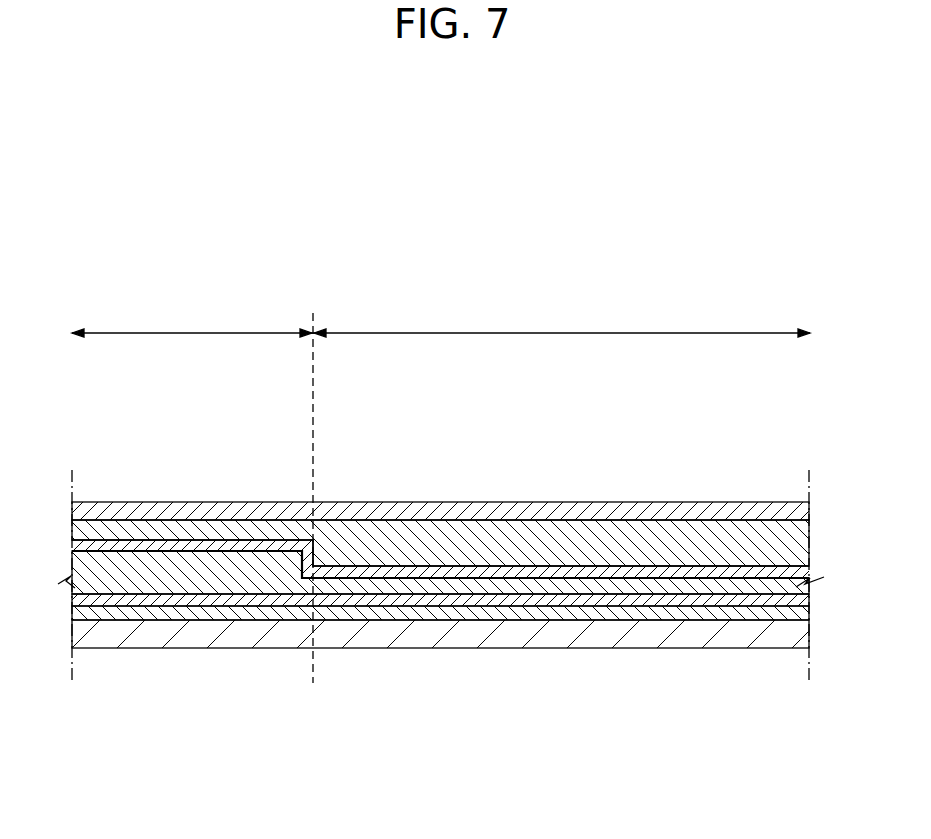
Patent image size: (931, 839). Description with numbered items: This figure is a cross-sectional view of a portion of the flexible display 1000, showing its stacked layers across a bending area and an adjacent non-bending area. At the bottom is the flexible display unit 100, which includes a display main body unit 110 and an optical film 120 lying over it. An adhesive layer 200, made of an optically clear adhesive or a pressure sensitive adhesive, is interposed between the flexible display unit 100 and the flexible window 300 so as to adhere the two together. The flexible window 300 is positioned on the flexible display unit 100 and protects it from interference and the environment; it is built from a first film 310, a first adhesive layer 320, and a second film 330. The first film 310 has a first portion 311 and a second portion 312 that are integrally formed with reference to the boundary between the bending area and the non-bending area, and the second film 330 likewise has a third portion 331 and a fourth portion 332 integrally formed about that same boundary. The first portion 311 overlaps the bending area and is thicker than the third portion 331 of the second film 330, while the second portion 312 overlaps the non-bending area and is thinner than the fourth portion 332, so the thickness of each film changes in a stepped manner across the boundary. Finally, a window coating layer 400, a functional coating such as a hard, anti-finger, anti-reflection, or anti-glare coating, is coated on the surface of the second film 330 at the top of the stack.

The flexible display 1000 is at (448, 225).
The flexible display unit 100 is at (667, 723).
The display main body unit 110 is at (647, 636).
The optical film 120 is at (558, 612).
The adhesive layer 200 is at (468, 600).
The flexible window 300 is at (456, 547).
The first film 310 is at (377, 716).
The first portion 311 is at (238, 572).
The second portion 312 is at (360, 588).
The first adhesive layer 320 is at (620, 572).
The second film 330 is at (378, 420).
The third portion 331 is at (240, 530).
The fourth portion 332 is at (360, 545).
The window coating layer 400 is at (716, 512).